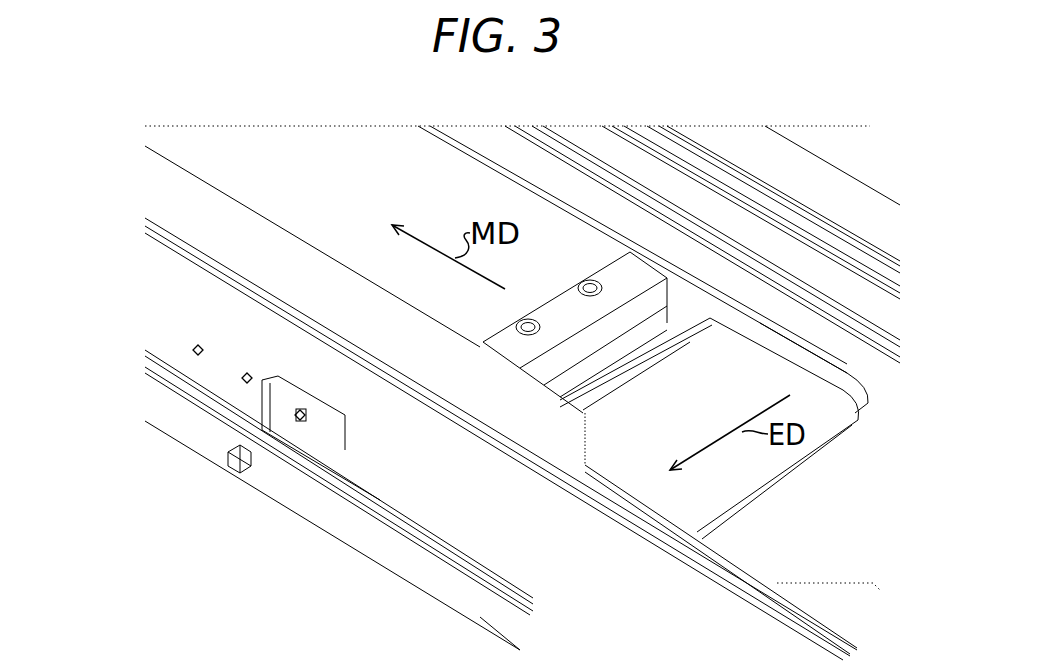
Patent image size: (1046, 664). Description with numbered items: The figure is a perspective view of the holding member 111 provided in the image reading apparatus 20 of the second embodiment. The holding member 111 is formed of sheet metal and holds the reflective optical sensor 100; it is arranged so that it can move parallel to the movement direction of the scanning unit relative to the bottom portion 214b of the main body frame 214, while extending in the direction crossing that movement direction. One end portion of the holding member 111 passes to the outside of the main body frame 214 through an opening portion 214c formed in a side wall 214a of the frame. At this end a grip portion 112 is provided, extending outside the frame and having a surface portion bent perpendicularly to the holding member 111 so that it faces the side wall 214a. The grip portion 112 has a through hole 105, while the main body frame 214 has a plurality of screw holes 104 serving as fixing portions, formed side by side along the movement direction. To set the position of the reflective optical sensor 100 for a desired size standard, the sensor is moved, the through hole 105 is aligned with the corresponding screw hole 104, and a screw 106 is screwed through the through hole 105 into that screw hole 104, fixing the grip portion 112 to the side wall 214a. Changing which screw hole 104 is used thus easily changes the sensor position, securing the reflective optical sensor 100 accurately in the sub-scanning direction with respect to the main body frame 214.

The image reading apparatus 20 is at (862, 160).
The reflective optical sensor 100 is at (560, 312).
The screw holes 104 is at (198, 346).
The through hole 105 is at (305, 420).
The screw 106 is at (240, 470).
The holding member 111 is at (610, 370).
The grip portion 112 is at (273, 415).
The main body frame 214 is at (645, 440).
The side wall 214a is at (462, 487).
The bottom portion 214b is at (748, 372).
The opening portion 214c is at (373, 500).